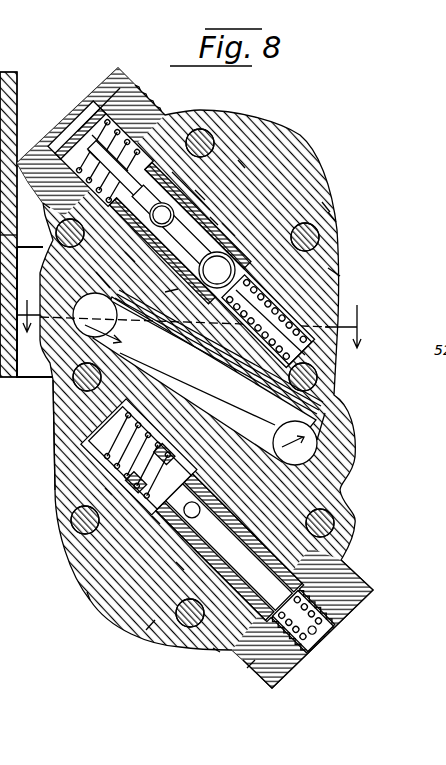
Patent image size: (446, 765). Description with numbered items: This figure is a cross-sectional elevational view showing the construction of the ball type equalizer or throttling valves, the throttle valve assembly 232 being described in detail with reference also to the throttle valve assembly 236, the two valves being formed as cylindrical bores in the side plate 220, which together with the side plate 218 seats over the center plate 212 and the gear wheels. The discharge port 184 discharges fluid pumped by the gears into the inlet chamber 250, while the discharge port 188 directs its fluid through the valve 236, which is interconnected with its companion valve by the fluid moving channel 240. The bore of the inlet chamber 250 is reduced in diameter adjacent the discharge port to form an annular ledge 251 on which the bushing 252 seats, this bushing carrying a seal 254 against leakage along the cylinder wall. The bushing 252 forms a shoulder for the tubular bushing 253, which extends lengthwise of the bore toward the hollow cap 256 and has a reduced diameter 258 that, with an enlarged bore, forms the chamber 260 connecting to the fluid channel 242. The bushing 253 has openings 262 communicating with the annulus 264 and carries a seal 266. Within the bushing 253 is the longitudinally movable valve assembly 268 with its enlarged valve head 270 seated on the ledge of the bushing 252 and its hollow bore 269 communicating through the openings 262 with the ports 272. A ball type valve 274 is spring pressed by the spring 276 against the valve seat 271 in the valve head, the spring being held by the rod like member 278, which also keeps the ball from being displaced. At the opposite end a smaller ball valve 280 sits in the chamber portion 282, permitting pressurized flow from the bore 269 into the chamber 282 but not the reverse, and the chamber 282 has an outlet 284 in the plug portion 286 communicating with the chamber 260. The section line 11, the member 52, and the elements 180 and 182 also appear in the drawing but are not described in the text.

The side plate 218 is at (11, 216).
The center plate 212 is at (19, 228).
The frame member 52 is at (20, 377).
The section line 11 is at (200, 313).
The throttle valve assembly 232 is at (121, 66).
The throttle valve assembly 236 is at (378, 586).
The inlet chamber 250 is at (334, 395).
The seal 254 is at (330, 239).
The spring 276 is at (195, 379).
The annular ledge 251 is at (224, 370).
The valve seat 271 is at (174, 341).
The discharge port 184 is at (292, 312).
The ball type valve 274 is at (217, 270).
The rod like member 278 is at (300, 352).
The discharge port 188 is at (100, 443).
The chamber 260 is at (88, 125).
The cap 256 is at (77, 127).
The outlet 284 is at (72, 132).
The fluid channel 242 is at (152, 120).
The reduced diameter 258 is at (172, 172).
The chamber portion 282 is at (238, 160).
The smaller ball valve 280 is at (195, 190).
The valve assembly 268 is at (200, 200).
The hollow bore 269 is at (210, 217).
The openings 262 is at (222, 223).
The annulus 264 is at (325, 202).
The enlarged valve head 270 is at (330, 212).
The bushing 252 is at (330, 268).
The seal 266 is at (125, 252).
The bushing 253 is at (96, 272).
The ports 272 is at (165, 575).
The plug portion 286 is at (50, 209).
The manifold 180 is at (53, 386).
The outlet port 182 is at (325, 413).
The side plate 220 is at (87, 592).
The fluid moving channel 240 is at (247, 668).